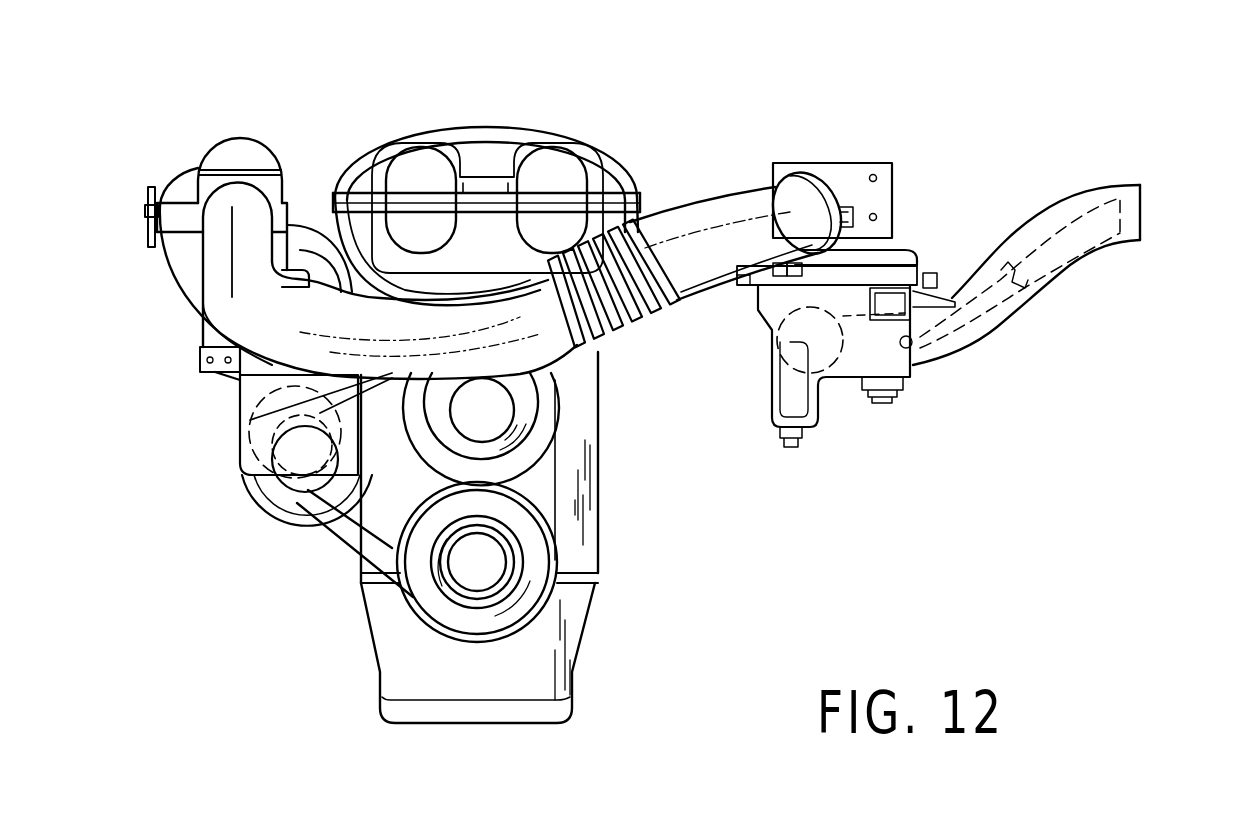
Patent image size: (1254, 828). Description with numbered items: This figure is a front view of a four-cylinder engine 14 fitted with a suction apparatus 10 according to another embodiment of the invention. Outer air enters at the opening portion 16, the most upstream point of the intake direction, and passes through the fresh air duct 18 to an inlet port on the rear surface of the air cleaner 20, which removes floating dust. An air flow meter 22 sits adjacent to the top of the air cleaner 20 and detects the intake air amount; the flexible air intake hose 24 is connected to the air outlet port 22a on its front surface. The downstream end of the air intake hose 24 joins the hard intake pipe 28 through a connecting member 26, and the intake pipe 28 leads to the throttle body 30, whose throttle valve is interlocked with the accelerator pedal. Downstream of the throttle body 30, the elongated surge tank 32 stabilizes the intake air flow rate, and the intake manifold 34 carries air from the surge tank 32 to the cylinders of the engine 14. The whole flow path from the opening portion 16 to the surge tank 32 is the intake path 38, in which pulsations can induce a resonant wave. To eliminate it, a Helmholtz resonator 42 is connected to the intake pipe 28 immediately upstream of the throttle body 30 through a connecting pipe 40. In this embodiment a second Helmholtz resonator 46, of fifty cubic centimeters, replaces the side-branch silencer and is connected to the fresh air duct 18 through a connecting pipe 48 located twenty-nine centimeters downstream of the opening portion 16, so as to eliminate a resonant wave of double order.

The suction apparatus 10 is at (666, 325).
The four-cylinder engine 14 is at (515, 118).
The opening portion 16 is at (1143, 232).
The fresh air duct 18 is at (1076, 256).
The air cleaner 20 is at (768, 316).
The air flow meter 22 is at (858, 165).
The air outlet port 22a is at (803, 173).
The air intake hose 24 is at (667, 208).
The connecting member 26 is at (628, 340).
The intake pipe 28 is at (220, 312).
The throttle body 30 is at (232, 178).
The surge tank 32 is at (243, 137).
The intake manifold 34 is at (176, 171).
The intake path 38 is at (727, 188).
The connecting pipe 40 is at (297, 225).
The Helmholtz resonator 42 is at (245, 410).
The Helmholtz resonator 46 is at (1060, 242).
The connecting pipe 48 is at (988, 305).